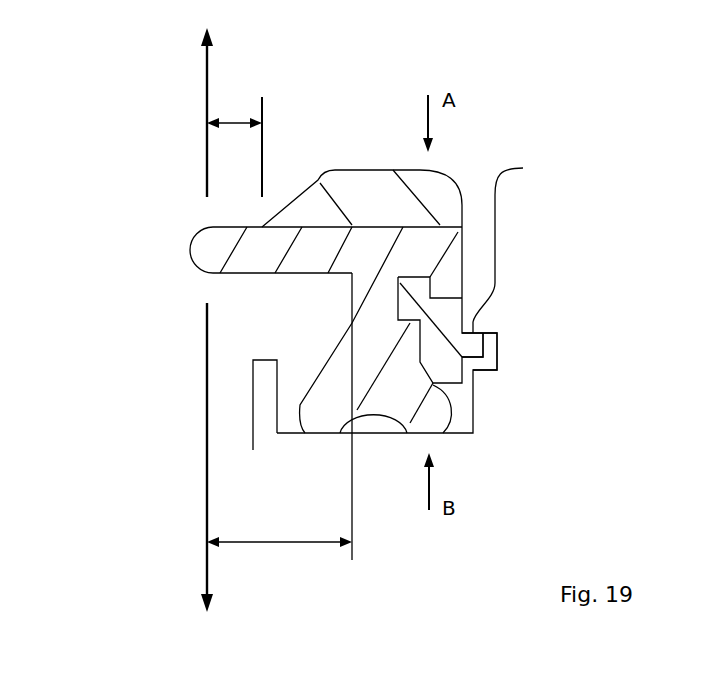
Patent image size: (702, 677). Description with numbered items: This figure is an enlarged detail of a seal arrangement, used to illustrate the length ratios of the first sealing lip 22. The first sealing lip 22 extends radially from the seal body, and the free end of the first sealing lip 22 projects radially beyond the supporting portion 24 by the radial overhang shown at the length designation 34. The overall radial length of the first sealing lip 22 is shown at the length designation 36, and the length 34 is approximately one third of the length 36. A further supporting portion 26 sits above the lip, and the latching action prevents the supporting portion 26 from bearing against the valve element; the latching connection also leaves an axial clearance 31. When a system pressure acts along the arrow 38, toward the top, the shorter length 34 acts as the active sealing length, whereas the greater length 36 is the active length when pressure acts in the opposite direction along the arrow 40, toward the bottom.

The first sealing lip 22 is at (212, 253).
The supporting portion 24 is at (433, 422).
The supporting portion 26 is at (378, 193).
The clearance 31 is at (477, 362).
The length designation 34 is at (234, 122).
The length designation 36 is at (285, 545).
The arrow 38 is at (207, 152).
The arrow 40 is at (207, 483).